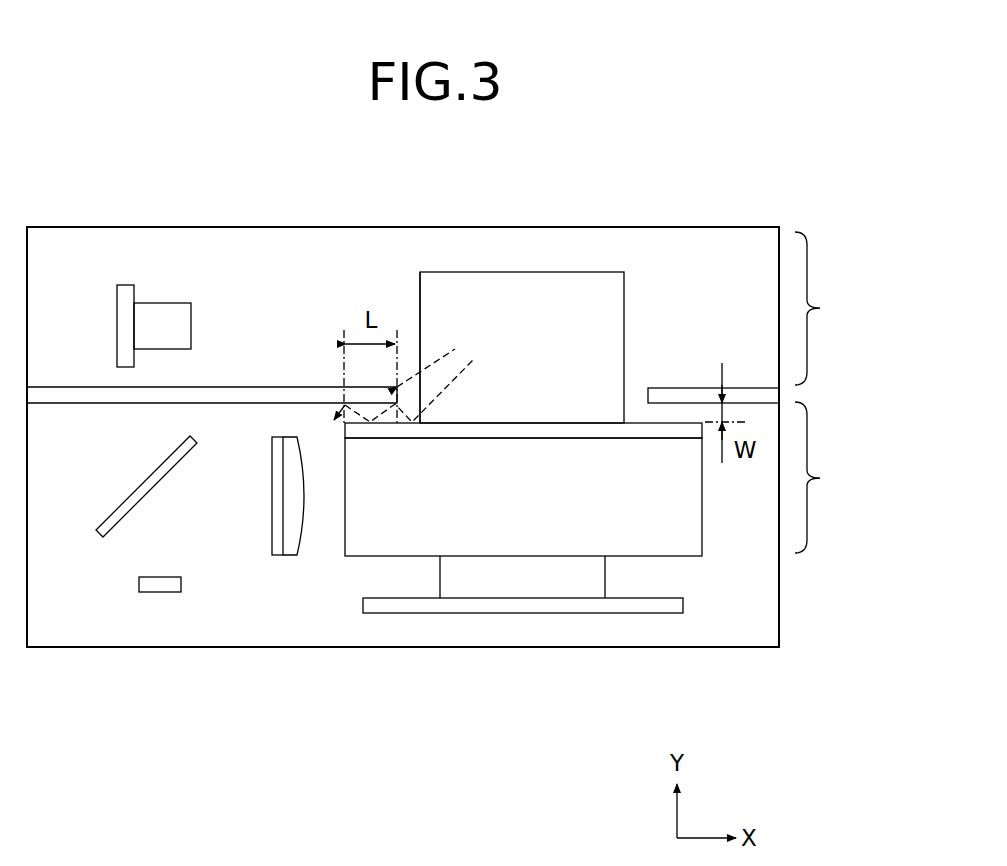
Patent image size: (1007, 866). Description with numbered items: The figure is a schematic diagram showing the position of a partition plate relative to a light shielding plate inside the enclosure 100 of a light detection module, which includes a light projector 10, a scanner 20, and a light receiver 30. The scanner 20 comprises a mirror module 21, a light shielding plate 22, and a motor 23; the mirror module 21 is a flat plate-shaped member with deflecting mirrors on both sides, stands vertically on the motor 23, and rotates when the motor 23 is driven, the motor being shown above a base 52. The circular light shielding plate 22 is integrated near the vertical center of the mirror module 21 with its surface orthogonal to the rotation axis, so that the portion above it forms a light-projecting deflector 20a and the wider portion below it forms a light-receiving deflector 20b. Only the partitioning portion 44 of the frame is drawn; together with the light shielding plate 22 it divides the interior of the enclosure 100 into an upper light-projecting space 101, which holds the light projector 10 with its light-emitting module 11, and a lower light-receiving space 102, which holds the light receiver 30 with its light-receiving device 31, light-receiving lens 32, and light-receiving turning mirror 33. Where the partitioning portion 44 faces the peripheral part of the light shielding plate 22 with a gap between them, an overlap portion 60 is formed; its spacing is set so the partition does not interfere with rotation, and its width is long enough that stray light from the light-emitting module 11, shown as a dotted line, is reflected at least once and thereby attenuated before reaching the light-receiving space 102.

The enclosure 100 is at (721, 227).
The light projector 10 is at (258, 266).
The light-emitting module 11 is at (160, 315).
The partitioning portion 44 is at (72, 391).
The scanner 20 is at (548, 257).
The light-projecting deflector 20a is at (587, 283).
The mirror module 21 is at (433, 285).
The light shielding plate 22 is at (510, 432).
The light-receiving deflector 20b is at (680, 530).
The motor 23 is at (590, 576).
The base 52 is at (688, 602).
The light receiver 30 is at (80, 619).
The light-receiving device 31 is at (161, 592).
The light-receiving lens 32 is at (280, 556).
The light-receiving turning mirror 33 is at (138, 488).
The overlap portion 60 is at (677, 371).
The light-projecting space 101 is at (837, 308).
The light-receiving space 102 is at (832, 477).